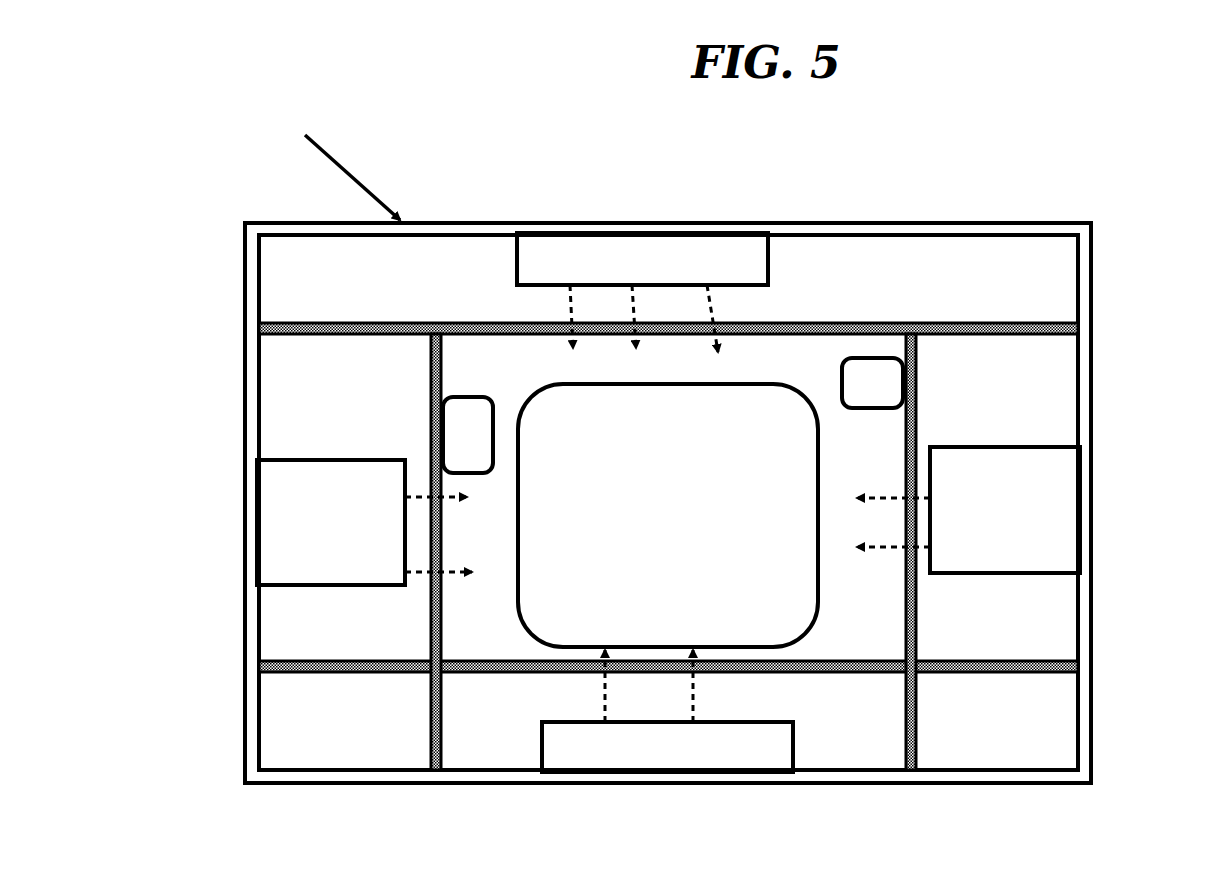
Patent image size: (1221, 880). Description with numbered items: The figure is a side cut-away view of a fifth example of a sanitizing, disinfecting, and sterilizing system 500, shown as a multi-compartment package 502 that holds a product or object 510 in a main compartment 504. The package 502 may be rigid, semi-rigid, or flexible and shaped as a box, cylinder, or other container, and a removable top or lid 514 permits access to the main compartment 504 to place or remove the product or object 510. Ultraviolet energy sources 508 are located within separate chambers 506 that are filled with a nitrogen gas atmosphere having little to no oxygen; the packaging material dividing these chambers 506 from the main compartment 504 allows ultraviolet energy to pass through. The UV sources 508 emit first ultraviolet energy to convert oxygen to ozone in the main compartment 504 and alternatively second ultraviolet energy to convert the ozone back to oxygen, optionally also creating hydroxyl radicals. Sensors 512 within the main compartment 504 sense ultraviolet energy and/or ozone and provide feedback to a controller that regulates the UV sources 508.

The UV treatment system 500 is at (519, 121).
The multi-compartment package 502 is at (240, 362).
The main compartment 504 is at (480, 352).
The separate chambers 506 is at (880, 265).
The ultraviolet energy sources 508 is at (640, 240).
The product or object 510 is at (793, 400).
The sensors 512 is at (472, 409).
The top (or lid) 514 is at (321, 164).